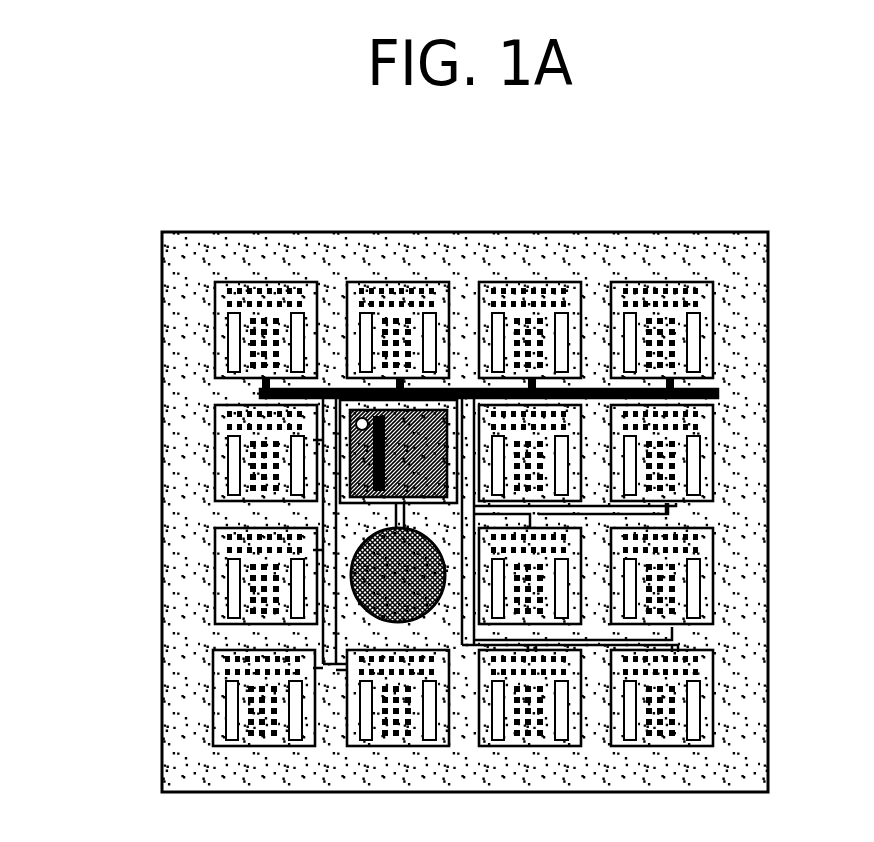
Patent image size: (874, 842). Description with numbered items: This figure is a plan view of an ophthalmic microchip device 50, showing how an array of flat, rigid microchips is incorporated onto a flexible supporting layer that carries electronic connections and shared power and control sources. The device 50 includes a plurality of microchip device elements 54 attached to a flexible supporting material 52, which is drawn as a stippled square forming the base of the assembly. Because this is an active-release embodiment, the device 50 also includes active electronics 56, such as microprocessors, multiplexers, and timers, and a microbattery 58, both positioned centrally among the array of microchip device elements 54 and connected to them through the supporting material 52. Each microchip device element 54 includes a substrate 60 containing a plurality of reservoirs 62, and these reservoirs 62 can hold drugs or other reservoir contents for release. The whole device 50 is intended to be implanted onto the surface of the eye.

The ophthalmic microchip device 50 is at (618, 190).
The flexible supporting material 52 is at (204, 772).
The microchip device elements 54 is at (203, 454).
The active electronics 56 is at (347, 452).
The microbattery 58 is at (352, 590).
The substrate 60 is at (310, 283).
The reservoirs 62 is at (258, 288).